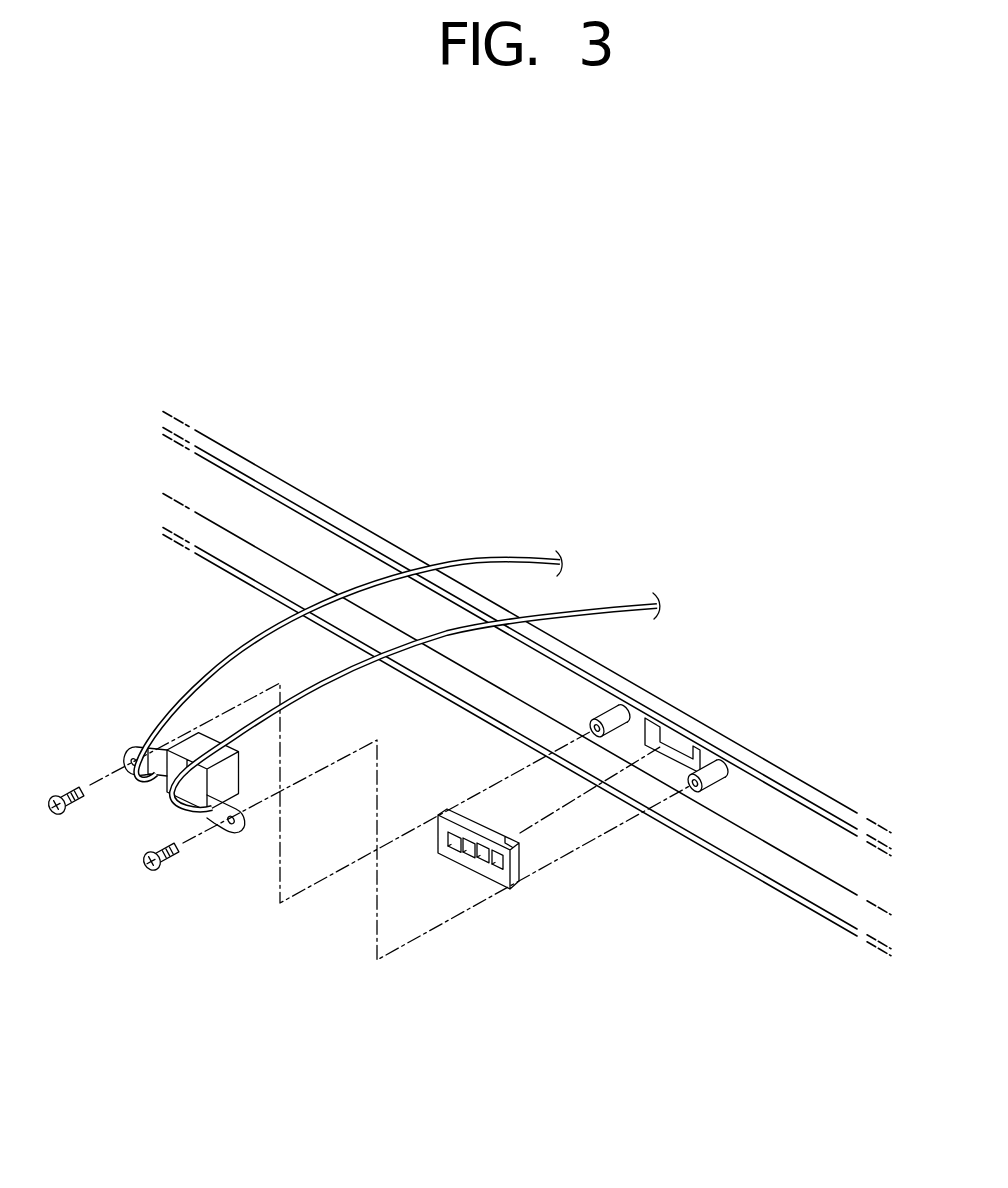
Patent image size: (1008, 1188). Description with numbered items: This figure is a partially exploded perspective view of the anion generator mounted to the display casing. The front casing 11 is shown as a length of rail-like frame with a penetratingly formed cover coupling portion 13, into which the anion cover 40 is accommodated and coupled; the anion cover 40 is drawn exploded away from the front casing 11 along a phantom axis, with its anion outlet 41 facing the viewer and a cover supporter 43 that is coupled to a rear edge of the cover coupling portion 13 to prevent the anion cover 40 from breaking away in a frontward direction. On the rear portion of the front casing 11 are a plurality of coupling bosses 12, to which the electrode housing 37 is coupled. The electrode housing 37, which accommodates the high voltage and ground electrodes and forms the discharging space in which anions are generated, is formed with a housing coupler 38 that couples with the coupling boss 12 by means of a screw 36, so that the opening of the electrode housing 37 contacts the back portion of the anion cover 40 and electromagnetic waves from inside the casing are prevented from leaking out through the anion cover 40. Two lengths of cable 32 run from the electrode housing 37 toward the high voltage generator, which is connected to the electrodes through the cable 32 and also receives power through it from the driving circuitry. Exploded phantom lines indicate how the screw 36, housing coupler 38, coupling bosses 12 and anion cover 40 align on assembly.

The front casing 11 is at (820, 903).
The coupling boss 12 is at (718, 790).
The cover coupling portion 13 is at (668, 758).
The cable 32 is at (260, 710).
The screw 36 is at (160, 873).
The electrode housing 37 is at (150, 740).
The housing coupler 38 is at (240, 833).
The anion cover 40 is at (538, 972).
The anion outlet 41 is at (482, 862).
The cover supporter 43 is at (513, 889).